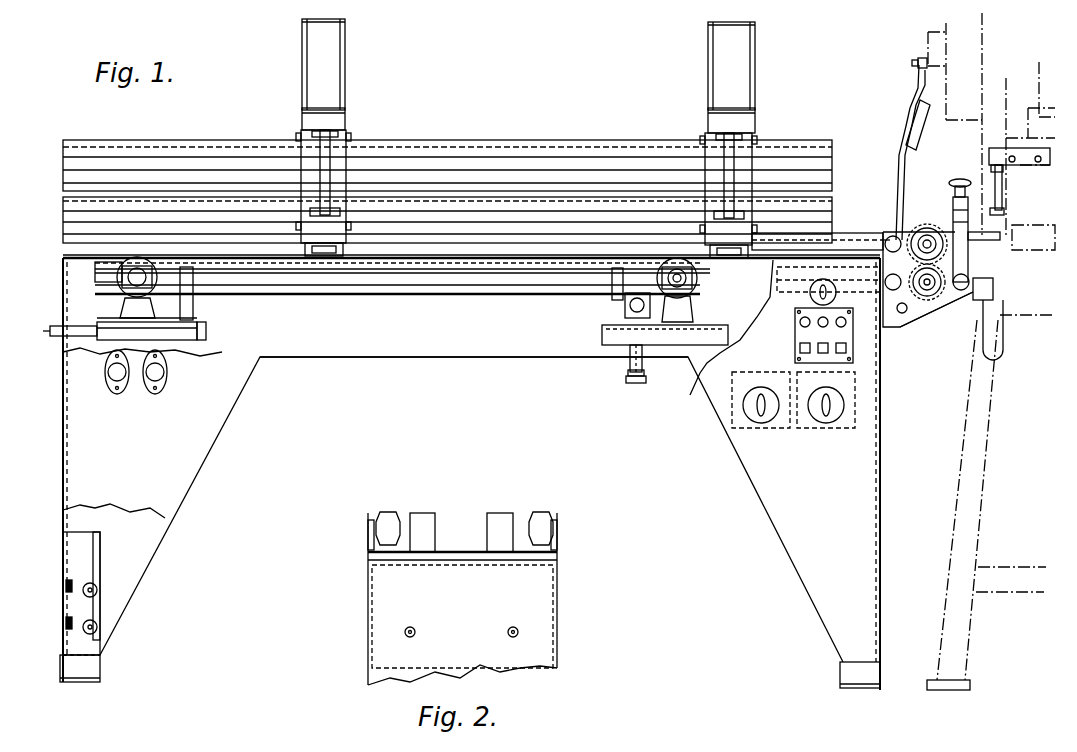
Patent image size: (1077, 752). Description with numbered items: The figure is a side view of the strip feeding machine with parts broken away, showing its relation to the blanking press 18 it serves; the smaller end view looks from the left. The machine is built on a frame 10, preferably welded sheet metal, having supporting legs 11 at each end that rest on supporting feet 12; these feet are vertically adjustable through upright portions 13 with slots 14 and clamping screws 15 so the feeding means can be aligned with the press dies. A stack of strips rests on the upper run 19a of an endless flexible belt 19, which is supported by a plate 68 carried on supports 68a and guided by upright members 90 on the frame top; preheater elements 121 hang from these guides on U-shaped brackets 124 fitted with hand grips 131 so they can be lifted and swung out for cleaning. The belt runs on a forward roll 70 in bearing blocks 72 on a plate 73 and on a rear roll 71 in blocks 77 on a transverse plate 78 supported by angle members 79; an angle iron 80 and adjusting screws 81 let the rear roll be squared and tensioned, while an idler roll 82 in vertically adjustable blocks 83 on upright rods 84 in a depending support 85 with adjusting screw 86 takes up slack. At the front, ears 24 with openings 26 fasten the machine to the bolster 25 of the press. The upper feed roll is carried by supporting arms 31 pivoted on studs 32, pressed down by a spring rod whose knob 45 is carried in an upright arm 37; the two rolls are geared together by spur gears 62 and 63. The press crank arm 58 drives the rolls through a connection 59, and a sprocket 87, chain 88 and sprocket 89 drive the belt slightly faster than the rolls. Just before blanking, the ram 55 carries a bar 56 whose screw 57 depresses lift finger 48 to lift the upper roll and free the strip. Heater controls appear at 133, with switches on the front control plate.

In FIG. 1, the frame 10 is at (396, 357).
In FIG. 2, the frame 10 is at (492, 586).
In FIG. 1, the supporting legs 11 is at (75, 456).
In FIG. 2, the supporting legs 11 is at (376, 618).
In FIG. 1, the supporting feet 12 is at (95, 666).
In FIG. 1, the upright portions 13 is at (61, 593).
In FIG. 1, the slots 14 is at (97, 550).
In FIG. 1, the clamping screws 15 is at (97, 624).
In FIG. 1, the blanking press 18 is at (983, 505).
In FIG. 1, the endless flexible belt 19 is at (440, 296).
In FIG. 1, the upper run of the belt 19a is at (404, 258).
In FIG. 1, the ears or lugs 24 is at (988, 290).
In FIG. 1, the bolster or bed 25 is at (970, 310).
In FIG. 1, the openings 26 is at (836, 294).
In FIG. 1, the supporting arms 31 is at (905, 236).
In FIG. 1, the pivot studs 32 is at (853, 352).
In FIG. 1, the upright arm 37 is at (970, 277).
In FIG. 1, the hand grip or knob 45 is at (964, 178).
In FIG. 1, the lift finger 48 is at (974, 245).
In FIG. 1, the ram 55 is at (1027, 270).
In FIG. 1, the bar 56 is at (1025, 165).
In FIG. 1, the adjustable screw or bolt 57 is at (1003, 200).
In FIG. 1, the adjustable crank arm 58 is at (915, 60).
In FIG. 1, the connection 59 is at (903, 184).
In FIG. 1, the spur gear 62 is at (912, 312).
In FIG. 1, the spur gear 63 is at (932, 220).
In FIG. 1, the plate 68 is at (388, 274).
In FIG. 1, the supports 68a is at (194, 278).
In FIG. 1, the forward roll 70 is at (680, 262).
In FIG. 1, the roll 71 is at (140, 268).
In FIG. 1, the bearing blocks 72 is at (688, 312).
In FIG. 1, the plate 73 is at (686, 330).
In FIG. 1, the blocks 77 is at (128, 309).
In FIG. 1, the transverse plate 78 is at (180, 322).
In FIG. 1, the angle members 79 is at (207, 331).
In FIG. 1, the angle iron 80 is at (87, 338).
In FIG. 1, the adjusting screw 81 is at (60, 326).
In FIG. 2, the adjusting screw 81 is at (415, 630).
In FIG. 1, the idler roll 82 is at (625, 303).
In FIG. 1, the vertically adjustable blocks 83 is at (630, 314).
In FIG. 1, the upright rods 84 is at (628, 360).
In FIG. 1, the depending support 85 is at (628, 374).
In FIG. 1, the adjusting screw 86 is at (636, 383).
In FIG. 1, the sprocket 87 is at (940, 310).
In FIG. 1, the chain 88 is at (748, 292).
In FIG. 1, the sprocket 89 is at (698, 279).
In FIG. 1, the upright members 90 is at (348, 72).
In FIG. 2, the upright members 90 is at (424, 518).
In FIG. 1, the preheater elements 121 is at (495, 200).
In FIG. 2, the preheater elements 121 is at (388, 515).
In FIG. 1, the U-shaped brackets 124 is at (305, 160).
In FIG. 1, the hand grips 131 is at (328, 156).
In FIG. 1, the switches, pilot lights, timers and thermostats 133 is at (822, 428).